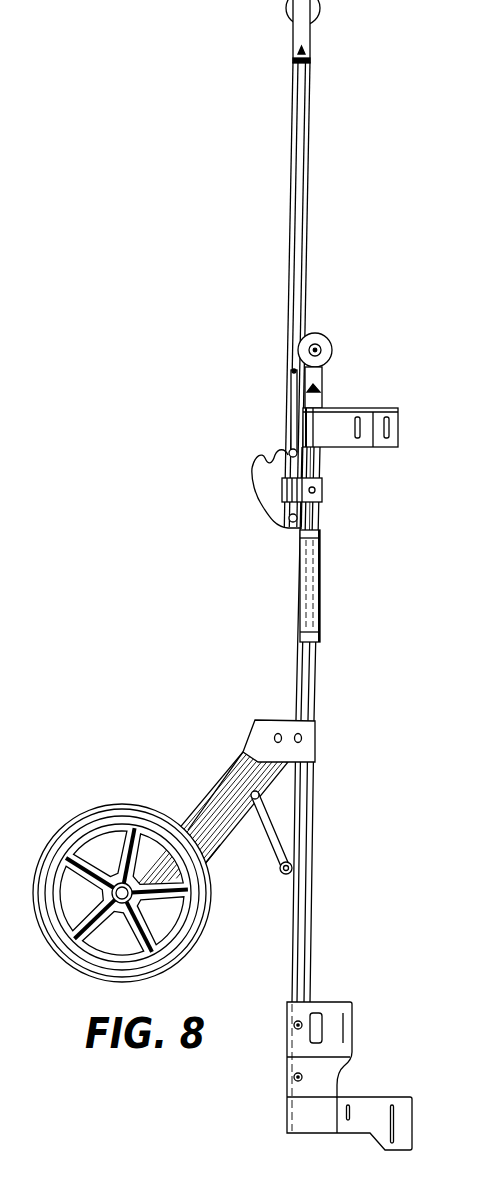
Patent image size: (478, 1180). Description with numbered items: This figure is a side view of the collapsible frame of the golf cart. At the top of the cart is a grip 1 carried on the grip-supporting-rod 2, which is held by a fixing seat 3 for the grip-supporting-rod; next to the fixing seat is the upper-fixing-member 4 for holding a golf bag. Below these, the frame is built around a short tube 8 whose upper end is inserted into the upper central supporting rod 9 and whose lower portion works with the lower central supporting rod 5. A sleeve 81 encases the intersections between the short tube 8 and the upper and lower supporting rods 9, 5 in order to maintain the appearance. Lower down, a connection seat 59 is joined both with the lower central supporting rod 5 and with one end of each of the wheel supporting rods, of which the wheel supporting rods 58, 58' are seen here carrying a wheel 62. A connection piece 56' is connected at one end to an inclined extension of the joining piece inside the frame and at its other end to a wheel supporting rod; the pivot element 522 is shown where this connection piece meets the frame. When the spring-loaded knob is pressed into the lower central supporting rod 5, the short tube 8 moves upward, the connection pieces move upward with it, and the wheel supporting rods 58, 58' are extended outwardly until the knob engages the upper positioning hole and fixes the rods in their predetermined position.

The grip 1 is at (306, 43).
The grip-supporting-rod 2 is at (305, 183).
The fixing seat 3 is at (270, 491).
The upper-fixing-member 4 is at (398, 411).
The upper central supporting rod 9 is at (322, 466).
The short tube 8 is at (310, 578).
The sleeve 81 is at (320, 620).
The lower central supporting rod 5 is at (310, 695).
The connection seat 59 is at (320, 757).
The wheel supporting rod 58 is at (204, 805).
The wheel supporting rod 58' is at (220, 824).
The connection piece 56' is at (329, 830).
The pivot pin 522 is at (284, 876).
The wheel 62 is at (92, 803).